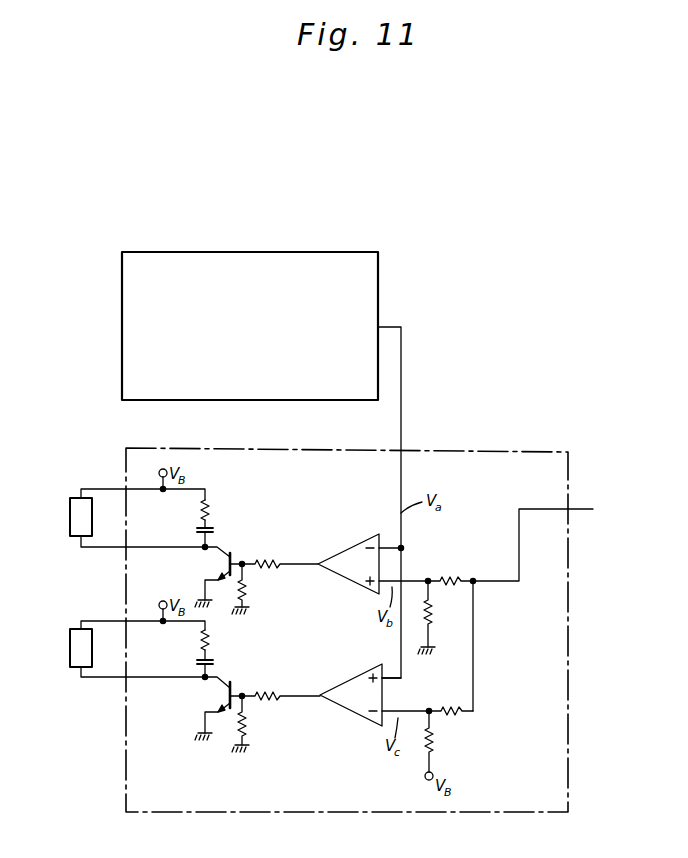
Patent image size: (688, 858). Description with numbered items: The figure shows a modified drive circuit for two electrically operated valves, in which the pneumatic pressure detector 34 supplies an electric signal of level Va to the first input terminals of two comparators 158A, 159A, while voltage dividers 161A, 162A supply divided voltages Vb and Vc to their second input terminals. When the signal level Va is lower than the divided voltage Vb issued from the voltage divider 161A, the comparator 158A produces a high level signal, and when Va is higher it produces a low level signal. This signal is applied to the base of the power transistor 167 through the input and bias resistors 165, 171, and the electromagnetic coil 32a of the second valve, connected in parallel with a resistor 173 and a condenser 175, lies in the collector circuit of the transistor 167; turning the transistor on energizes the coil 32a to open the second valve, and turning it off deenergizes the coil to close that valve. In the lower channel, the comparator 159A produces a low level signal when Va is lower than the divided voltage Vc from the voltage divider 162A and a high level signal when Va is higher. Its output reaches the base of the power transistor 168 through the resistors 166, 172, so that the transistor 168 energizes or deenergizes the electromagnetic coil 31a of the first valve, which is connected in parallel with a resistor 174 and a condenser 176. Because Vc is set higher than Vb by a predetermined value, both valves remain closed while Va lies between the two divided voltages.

The pneumatic pressure detector 34 is at (312, 252).
The electromagnetic coil 32a is at (69, 526).
The electromagnetic coil 31a is at (69, 657).
The resistor 173 is at (208, 512).
The resistor 174 is at (210, 640).
The condenser 175 is at (198, 531).
The condenser 176 is at (200, 661).
The power transistor 167 is at (227, 553).
The power transistor 168 is at (226, 689).
The input resistor 165 is at (268, 560).
The input resistor 166 is at (268, 693).
The bias resistor 171 is at (246, 590).
The bias resistor 172 is at (250, 718).
The comparator 158A is at (338, 580).
The comparator 159A is at (340, 711).
The voltage divider 161A is at (433, 570).
The voltage divider 162A is at (439, 719).